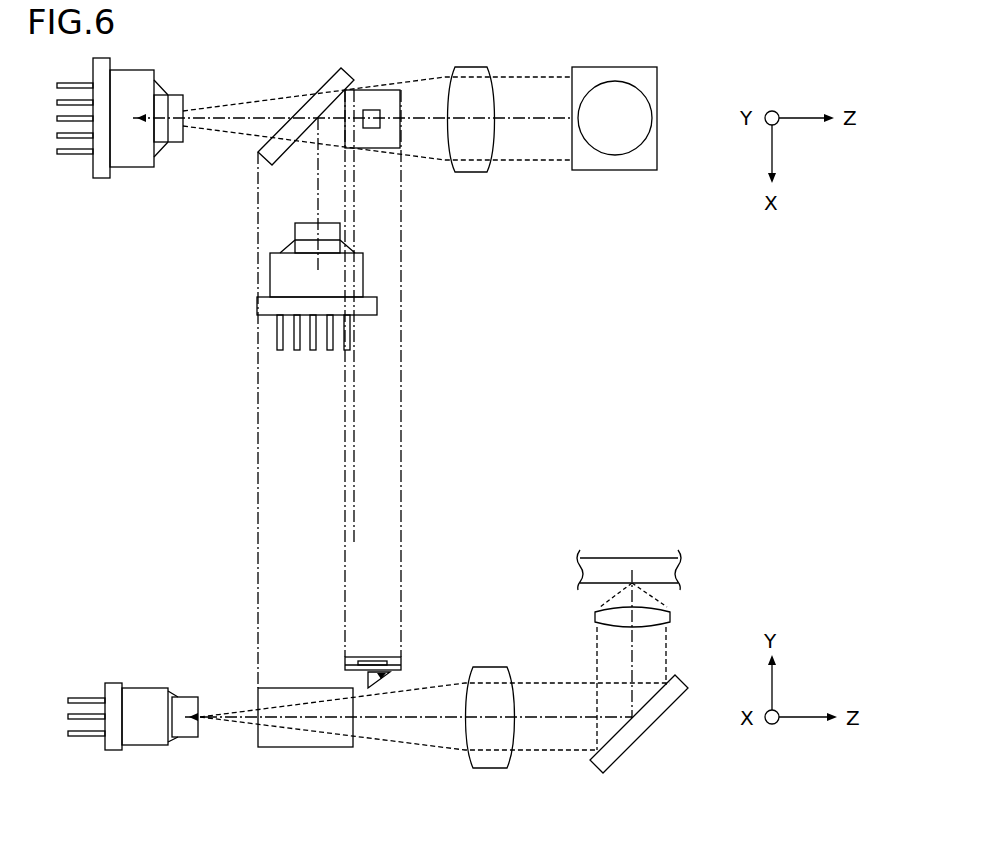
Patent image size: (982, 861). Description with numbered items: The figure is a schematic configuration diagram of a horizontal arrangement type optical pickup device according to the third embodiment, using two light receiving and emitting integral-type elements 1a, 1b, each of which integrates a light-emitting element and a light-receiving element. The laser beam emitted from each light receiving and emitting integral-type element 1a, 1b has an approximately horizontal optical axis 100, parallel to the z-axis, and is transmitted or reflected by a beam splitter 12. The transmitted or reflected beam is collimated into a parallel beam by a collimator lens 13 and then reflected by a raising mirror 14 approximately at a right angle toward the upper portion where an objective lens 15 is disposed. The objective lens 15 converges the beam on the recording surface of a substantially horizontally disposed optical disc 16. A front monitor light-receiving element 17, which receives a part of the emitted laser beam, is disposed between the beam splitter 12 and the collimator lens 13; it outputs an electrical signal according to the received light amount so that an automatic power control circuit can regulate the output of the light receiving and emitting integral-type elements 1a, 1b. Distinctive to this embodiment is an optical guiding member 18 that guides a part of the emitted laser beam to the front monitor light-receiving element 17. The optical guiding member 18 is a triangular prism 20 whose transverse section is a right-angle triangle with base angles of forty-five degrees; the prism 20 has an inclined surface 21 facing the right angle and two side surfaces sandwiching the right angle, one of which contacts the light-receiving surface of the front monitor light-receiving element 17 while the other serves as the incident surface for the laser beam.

The light receiving and emitting integral-type element 1a is at (365, 315).
The light receiving and emitting integral-type element 1b is at (142, 160).
The beam splitter 12 is at (323, 83).
The collimator lens 13 is at (470, 67).
The raising mirror 14 is at (633, 170).
The objective lens 15 is at (615, 93).
The optical disc 16 is at (660, 558).
The front monitor light-receiving element 17 is at (380, 97).
The optical guiding member 18 is at (447, 806).
The triangular prism 20 is at (388, 674).
The inclined surface 21 is at (380, 676).
The optical axis 100 is at (243, 717).